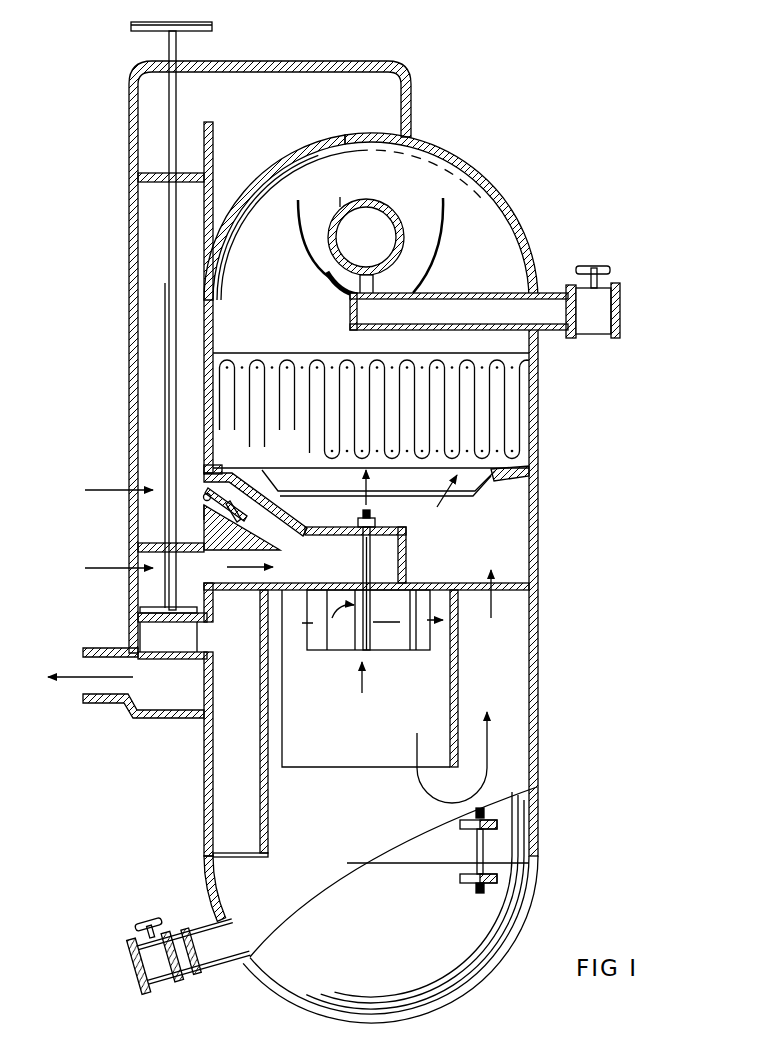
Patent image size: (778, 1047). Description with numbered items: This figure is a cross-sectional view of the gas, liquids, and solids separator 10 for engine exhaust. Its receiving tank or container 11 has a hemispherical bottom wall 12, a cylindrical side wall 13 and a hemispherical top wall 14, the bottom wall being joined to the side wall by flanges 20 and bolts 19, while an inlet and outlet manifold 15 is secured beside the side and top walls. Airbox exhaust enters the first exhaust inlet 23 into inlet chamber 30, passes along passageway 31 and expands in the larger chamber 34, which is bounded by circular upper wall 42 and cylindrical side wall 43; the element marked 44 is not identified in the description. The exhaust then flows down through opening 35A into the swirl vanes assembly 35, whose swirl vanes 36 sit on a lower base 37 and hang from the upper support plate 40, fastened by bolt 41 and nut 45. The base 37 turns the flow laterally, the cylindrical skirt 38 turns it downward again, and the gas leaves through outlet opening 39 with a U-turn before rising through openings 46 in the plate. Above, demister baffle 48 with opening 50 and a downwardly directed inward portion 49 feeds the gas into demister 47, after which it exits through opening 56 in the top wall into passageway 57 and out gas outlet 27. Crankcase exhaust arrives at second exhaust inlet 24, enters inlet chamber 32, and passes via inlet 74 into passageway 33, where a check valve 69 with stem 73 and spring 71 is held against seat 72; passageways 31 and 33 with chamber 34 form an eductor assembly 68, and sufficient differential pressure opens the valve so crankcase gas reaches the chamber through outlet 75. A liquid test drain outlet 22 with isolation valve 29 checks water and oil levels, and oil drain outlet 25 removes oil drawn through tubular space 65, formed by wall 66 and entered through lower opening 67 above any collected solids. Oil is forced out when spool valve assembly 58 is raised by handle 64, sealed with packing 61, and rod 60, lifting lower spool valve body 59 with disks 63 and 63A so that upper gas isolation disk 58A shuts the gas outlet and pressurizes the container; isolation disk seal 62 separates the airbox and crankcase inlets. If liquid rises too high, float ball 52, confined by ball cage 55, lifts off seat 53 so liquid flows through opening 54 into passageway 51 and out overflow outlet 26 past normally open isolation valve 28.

The gas, liquids, and solids separator 10 is at (586, 138).
The receiving tank or container 11 is at (392, 560).
The hemispherical bottom wall 12 is at (183, 959).
The cylindrical side wall 13 is at (539, 669).
The hemispherical top wall 14 is at (536, 244).
The inlet and outlet manifold 15 is at (228, 341).
The bolts 19 is at (455, 864).
The flanges 20 is at (461, 826).
The liquid test drain outlet 22 is at (183, 959).
The first exhaust inlet 23 is at (135, 578).
The second exhaust inlet 24 is at (133, 488).
The oil drain outlet 25 is at (86, 686).
The overflow outlet 26 is at (571, 330).
The gas outlet 27 is at (137, 165).
The normally open isolation valve 28 is at (613, 318).
The isolation valve 29 is at (145, 986).
The inlet chamber 30 is at (137, 602).
The passageway 31 is at (222, 582).
The inlet chamber 32 is at (130, 517).
The passageway 33 is at (204, 518).
The chamber 34 is at (356, 569).
The swirl vanes assembly 35 is at (372, 655).
The opening 35A is at (372, 607).
The swirl vanes 36 is at (342, 651).
The lower base 37 is at (398, 651).
The cylindrical skirt 38 is at (459, 656).
The outlet opening 39 is at (333, 766).
The upper support plate 40 is at (441, 583).
The bolt 41 is at (387, 560).
The circular upper wall 42 is at (406, 531).
The cylindrical side wall 43 is at (406, 551).
The baffle plate end 44 is at (358, 526).
The nut 45 is at (374, 515).
The openings 46 is at (502, 581).
The demister 47 is at (508, 421).
The demister baffle 48 is at (538, 474).
The downwardly directed inward portion 49 is at (487, 482).
The opening 50 is at (459, 497).
The passageway 51 is at (485, 312).
The float ball 52 is at (377, 249).
The seat 53 is at (405, 269).
The opening 54 is at (350, 301).
The ball cage 55 is at (442, 198).
The gas outlet opening 56 is at (402, 143).
The passageway 57 is at (300, 70).
The spool valve assembly 58 is at (191, 146).
The upper gas isolation disk 58A is at (142, 183).
The lower spool valve body 59 is at (198, 637).
The rod 60 is at (245, 341).
The packing 61 is at (167, 62).
The isolation disk seal 62 is at (138, 547).
The disk 63 is at (150, 659).
The isolation disk seal 63A is at (207, 617).
The handle 64 is at (213, 26).
The tubular space 65 is at (258, 736).
The wall 66 is at (268, 839).
The lower opening 67 is at (233, 856).
The eductor assembly 68 is at (257, 483).
The check valve 69 is at (247, 513).
The spring 71 is at (242, 527).
The seat 72 is at (268, 492).
The stem 73 is at (203, 496).
The inlet 74 is at (212, 467).
The outlet 75 is at (301, 537).